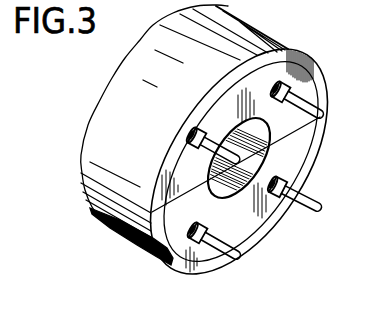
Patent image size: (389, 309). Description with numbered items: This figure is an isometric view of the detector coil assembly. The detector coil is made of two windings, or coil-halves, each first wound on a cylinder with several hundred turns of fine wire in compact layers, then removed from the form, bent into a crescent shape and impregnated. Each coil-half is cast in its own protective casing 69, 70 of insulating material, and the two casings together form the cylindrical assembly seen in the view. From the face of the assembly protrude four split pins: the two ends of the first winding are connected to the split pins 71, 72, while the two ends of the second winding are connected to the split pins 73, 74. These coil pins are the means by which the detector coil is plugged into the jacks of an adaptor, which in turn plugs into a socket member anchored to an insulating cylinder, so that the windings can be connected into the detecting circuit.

The protective casing 69 is at (205, 154).
The protective casing 70 is at (93, 185).
The split pin 71 is at (310, 100).
The split pin 72 is at (217, 145).
The split pin 73 is at (242, 257).
The split pin 74 is at (322, 203).